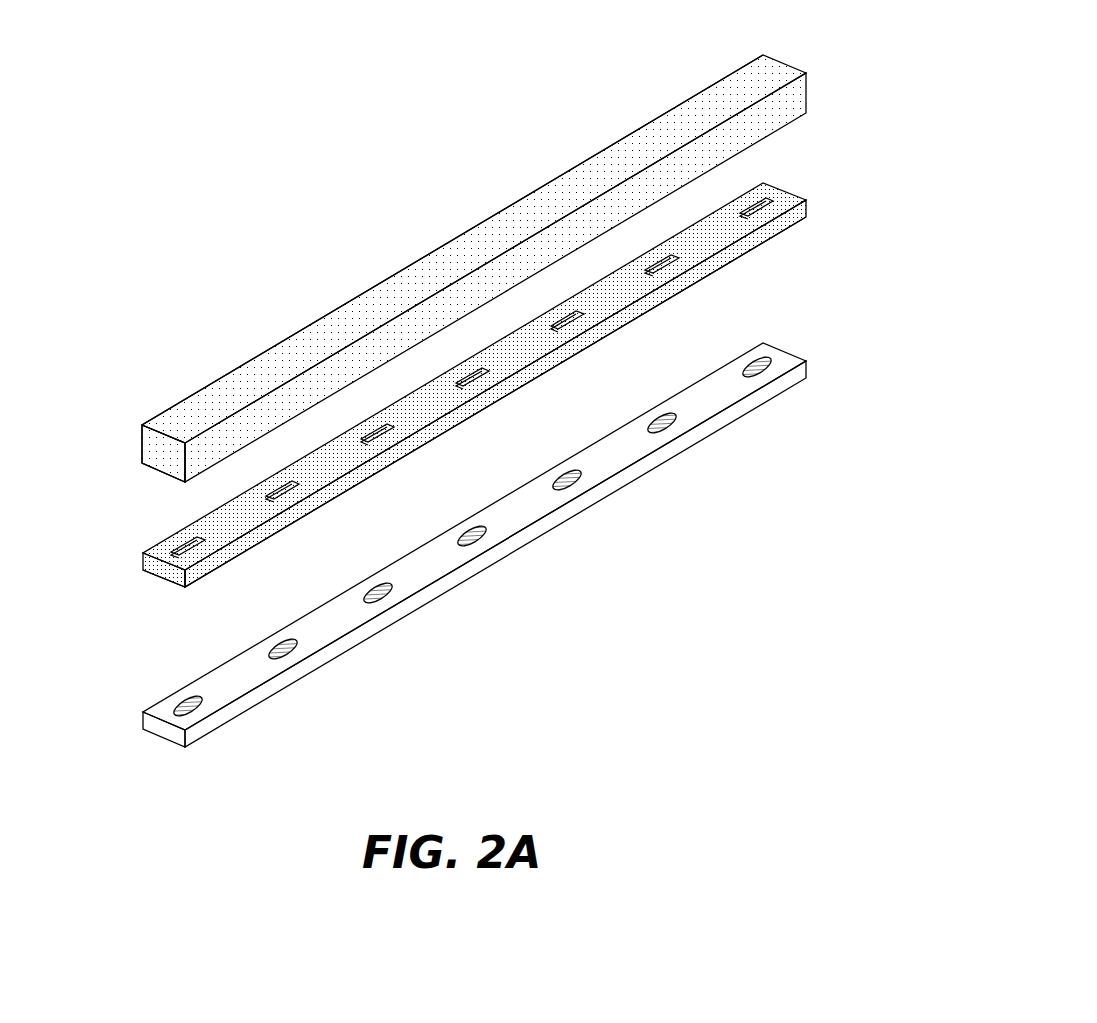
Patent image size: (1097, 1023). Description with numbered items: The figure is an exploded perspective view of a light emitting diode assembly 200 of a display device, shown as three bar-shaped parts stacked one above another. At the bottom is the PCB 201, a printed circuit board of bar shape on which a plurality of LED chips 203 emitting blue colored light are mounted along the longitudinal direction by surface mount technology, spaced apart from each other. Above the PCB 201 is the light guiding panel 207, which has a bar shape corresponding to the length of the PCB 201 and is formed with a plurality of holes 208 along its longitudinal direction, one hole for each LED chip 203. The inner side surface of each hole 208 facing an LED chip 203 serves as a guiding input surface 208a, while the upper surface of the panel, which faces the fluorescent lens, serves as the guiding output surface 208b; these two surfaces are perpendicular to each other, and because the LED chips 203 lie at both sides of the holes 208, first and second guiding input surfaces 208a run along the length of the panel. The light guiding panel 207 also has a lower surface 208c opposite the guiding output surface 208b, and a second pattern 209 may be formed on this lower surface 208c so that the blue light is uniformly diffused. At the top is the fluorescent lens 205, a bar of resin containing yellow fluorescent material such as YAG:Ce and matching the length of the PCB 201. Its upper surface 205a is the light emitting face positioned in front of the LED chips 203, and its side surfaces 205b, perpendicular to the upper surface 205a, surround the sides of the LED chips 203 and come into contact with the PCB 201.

The LED assembly 200 is at (375, 210).
The PCB 201 is at (439, 574).
The LED chips 203 is at (200, 705).
The fluorescent lens 205 is at (470, 268).
The upper surface 205a is at (212, 405).
The side surfaces 205b is at (170, 455).
The light guiding panel 207 is at (449, 399).
The holes 208 is at (400, 387).
The guiding input surface 208a is at (288, 506).
The guiding output surface 208b is at (153, 536).
The lower surface 208c is at (168, 582).
The second pattern 209 is at (198, 584).